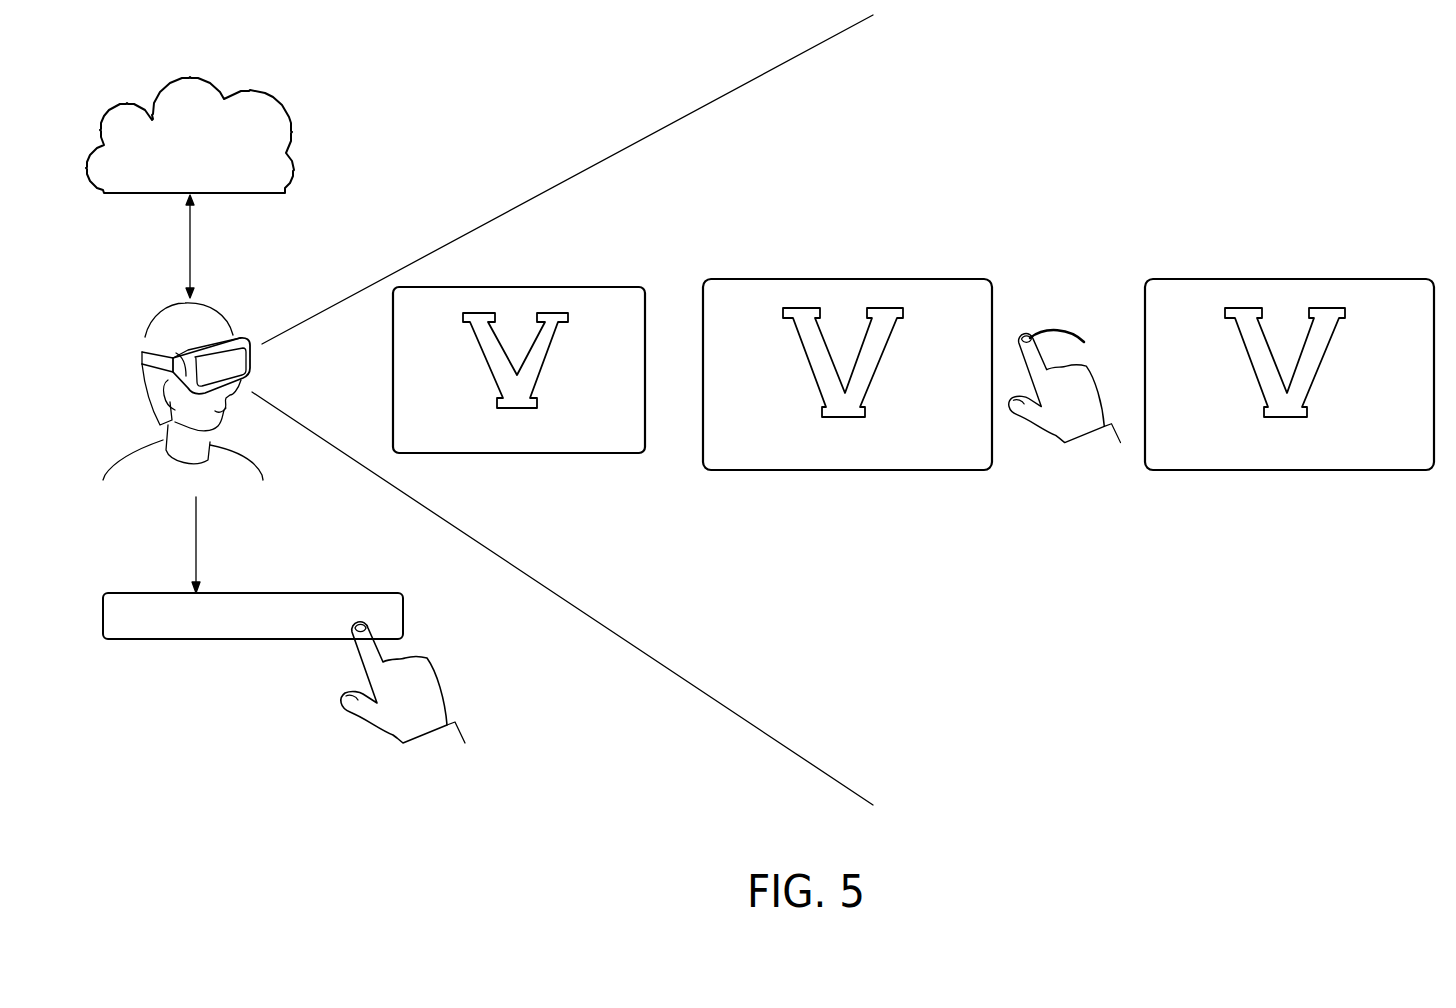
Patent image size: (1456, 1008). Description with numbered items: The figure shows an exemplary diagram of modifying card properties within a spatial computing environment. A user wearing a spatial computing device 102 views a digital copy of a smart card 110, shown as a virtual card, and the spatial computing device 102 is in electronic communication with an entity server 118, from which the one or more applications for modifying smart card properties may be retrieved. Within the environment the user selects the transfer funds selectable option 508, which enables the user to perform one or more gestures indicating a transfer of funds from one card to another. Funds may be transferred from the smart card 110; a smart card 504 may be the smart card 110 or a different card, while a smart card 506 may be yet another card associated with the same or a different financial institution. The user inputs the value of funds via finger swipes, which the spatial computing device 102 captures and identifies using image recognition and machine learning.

The entity server 118 is at (197, 77).
The spatial computing device 102 is at (255, 357).
The smart card 110 is at (500, 287).
The smart card 504 is at (860, 279).
The smart card 506 is at (1277, 279).
The transfer funds selectable option 508 is at (270, 593).